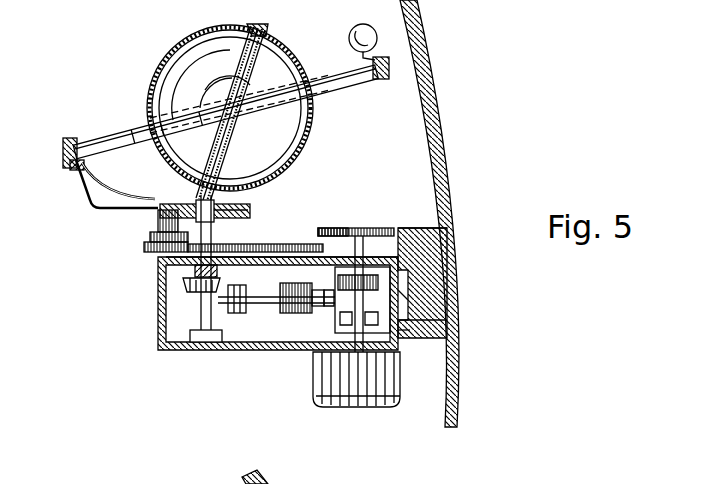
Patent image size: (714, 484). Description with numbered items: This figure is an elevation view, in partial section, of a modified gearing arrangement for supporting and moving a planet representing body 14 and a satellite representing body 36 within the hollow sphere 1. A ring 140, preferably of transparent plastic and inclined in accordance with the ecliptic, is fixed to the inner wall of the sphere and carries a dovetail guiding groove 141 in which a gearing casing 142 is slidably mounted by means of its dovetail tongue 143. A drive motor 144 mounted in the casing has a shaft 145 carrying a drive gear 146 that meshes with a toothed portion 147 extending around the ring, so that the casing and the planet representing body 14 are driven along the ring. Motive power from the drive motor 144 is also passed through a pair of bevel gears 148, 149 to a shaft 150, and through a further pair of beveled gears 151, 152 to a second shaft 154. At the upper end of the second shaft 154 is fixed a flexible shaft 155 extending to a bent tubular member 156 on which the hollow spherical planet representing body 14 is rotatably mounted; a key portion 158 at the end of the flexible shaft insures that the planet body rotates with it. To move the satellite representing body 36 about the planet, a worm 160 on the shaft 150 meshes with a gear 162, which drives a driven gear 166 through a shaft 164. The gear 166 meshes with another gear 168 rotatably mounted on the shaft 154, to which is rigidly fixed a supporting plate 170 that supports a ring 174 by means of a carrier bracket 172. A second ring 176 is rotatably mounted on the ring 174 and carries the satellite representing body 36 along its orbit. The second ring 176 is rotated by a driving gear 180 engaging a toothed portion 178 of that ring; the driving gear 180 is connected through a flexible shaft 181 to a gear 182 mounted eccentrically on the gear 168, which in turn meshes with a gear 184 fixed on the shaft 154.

The hollow sphere 1 is at (420, 34).
The planet representing body 14 is at (158, 62).
The satellite representing body 36 is at (366, 22).
The ring 140 is at (448, 240).
The dovetail guiding groove 141 is at (410, 298).
The gearing casing 142 is at (244, 352).
The dovetail tongue 143 is at (402, 338).
The drive motor 144 is at (316, 402).
The shaft 145 is at (402, 350).
The drive gear 146 is at (364, 228).
The toothed portion 147 is at (398, 228).
The bevel gear 148 is at (388, 297).
The bevel gear 149 is at (300, 316).
The shaft 150 is at (272, 316).
The beveled gear 151 is at (228, 346).
The beveled gear 152 is at (185, 286).
The second shaft 154 is at (158, 260).
The flexible shaft 155 is at (238, 118).
The bent tubular member 156 is at (215, 113).
The key portion 158 is at (265, 26).
The worm 160 is at (302, 354).
The gear 162 is at (334, 228).
The shaft 164 is at (284, 300).
The driven gear 166 is at (282, 244).
The gear 168 is at (246, 228).
The supporting plate 170 is at (152, 218).
The carrier bracket 172 is at (92, 204).
The ring 174 is at (70, 166).
The second ring 176 is at (95, 142).
The toothed portion 178 is at (385, 60).
The driving gear 180 is at (64, 144).
The flexible shaft 181 is at (134, 192).
The gear 182 is at (150, 240).
The gear 184 is at (184, 204).